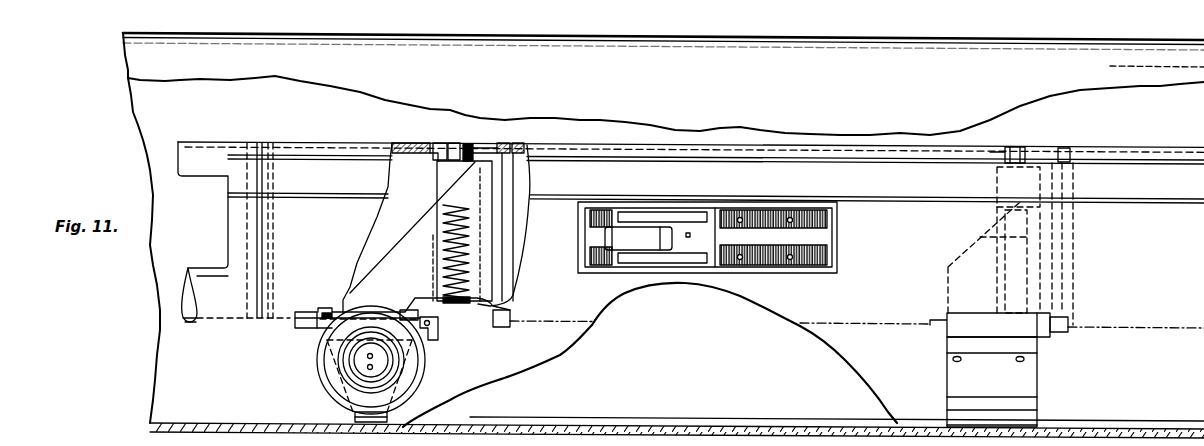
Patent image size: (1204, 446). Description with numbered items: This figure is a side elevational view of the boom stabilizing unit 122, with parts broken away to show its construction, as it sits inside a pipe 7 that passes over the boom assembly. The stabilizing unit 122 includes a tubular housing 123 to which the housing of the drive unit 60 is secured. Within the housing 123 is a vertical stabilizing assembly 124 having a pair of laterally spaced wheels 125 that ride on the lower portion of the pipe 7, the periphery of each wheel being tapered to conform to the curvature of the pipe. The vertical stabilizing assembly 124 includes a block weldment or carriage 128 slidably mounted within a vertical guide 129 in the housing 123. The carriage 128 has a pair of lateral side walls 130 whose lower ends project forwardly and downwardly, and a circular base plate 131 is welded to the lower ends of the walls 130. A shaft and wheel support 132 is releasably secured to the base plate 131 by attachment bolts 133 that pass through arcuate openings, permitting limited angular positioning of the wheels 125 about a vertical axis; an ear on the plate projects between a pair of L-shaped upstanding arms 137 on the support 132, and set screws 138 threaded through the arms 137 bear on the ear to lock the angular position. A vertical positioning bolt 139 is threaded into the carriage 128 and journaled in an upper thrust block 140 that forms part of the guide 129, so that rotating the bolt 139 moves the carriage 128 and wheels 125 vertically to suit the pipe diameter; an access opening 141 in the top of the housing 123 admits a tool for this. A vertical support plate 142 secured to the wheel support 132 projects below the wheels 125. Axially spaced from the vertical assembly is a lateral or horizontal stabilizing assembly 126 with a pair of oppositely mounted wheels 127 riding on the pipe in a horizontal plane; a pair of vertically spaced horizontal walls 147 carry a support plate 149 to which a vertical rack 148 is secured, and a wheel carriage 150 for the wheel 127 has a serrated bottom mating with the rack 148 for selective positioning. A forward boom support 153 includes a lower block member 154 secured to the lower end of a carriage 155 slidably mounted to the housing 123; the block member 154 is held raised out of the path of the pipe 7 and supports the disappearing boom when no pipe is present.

The pipe 7 is at (128, 54).
The drive unit 60 is at (228, 131).
The stabilizing unit 122 is at (810, 117).
The tubular housing 123 is at (402, 143).
The vertical stabilizing assembly 124 is at (402, 236).
The wheels 125 is at (322, 382).
The horizontal stabilizing assembly 126 is at (852, 246).
The wheels 127 is at (598, 238).
The carriage 128 is at (433, 275).
The vertical guide 129 is at (507, 220).
The lateral side walls 130 is at (433, 212).
The circular base plate 131 is at (318, 328).
The shaft and wheel support 132 is at (322, 336).
The attachment bolts 133 is at (328, 312).
The L-shaped upstanding arms 137 is at (437, 323).
The set screws 138 is at (436, 327).
The vertical positioning bolt 139 is at (468, 143).
The upper thrust block 140 is at (437, 170).
The access opening 141 is at (446, 143).
The vertical support plate 142 is at (368, 422).
The horizontal walls 147 is at (797, 186).
The vertical rack 148 is at (827, 222).
The support plate 149 is at (712, 250).
The wheel carriage 150 is at (654, 230).
The forward boom support 153 is at (980, 231).
The lower block member 154 is at (1033, 398).
The carriage 155 is at (945, 272).